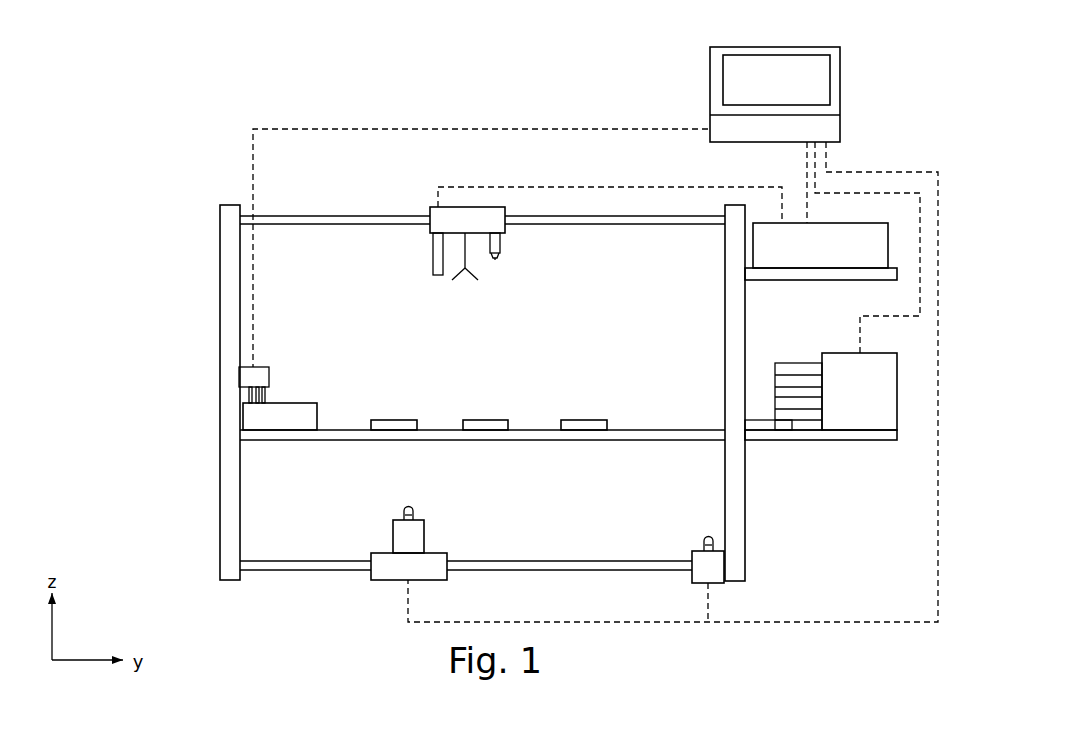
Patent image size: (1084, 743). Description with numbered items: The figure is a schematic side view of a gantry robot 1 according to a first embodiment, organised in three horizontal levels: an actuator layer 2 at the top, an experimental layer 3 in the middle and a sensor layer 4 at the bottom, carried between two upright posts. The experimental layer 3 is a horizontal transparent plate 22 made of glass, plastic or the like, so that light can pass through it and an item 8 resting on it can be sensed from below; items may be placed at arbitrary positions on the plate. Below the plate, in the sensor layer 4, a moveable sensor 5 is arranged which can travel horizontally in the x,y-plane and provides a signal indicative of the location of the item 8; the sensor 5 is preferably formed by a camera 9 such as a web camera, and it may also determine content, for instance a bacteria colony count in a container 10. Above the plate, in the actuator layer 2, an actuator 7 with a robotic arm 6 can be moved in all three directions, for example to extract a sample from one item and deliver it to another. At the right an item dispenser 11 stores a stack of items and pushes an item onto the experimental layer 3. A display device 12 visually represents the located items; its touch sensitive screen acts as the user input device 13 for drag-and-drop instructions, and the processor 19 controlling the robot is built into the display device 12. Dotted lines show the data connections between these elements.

The robot 1 is at (162, 137).
The actuator layer 2 is at (409, 227).
The experimental layer 3 is at (486, 429).
The sensor layer 4 is at (403, 569).
The sensor 5 is at (454, 590).
The robotic arm 6 is at (278, 398).
The actuator 7 is at (430, 192).
The item 8 is at (452, 357).
The camera 9 is at (382, 535).
The container 10 is at (392, 403).
The item dispenser 11 is at (849, 455).
The display device 12 is at (773, 75).
The user input device 13 is at (755, 72).
The processor 19 is at (843, 125).
The transparent plate 22 is at (622, 438).